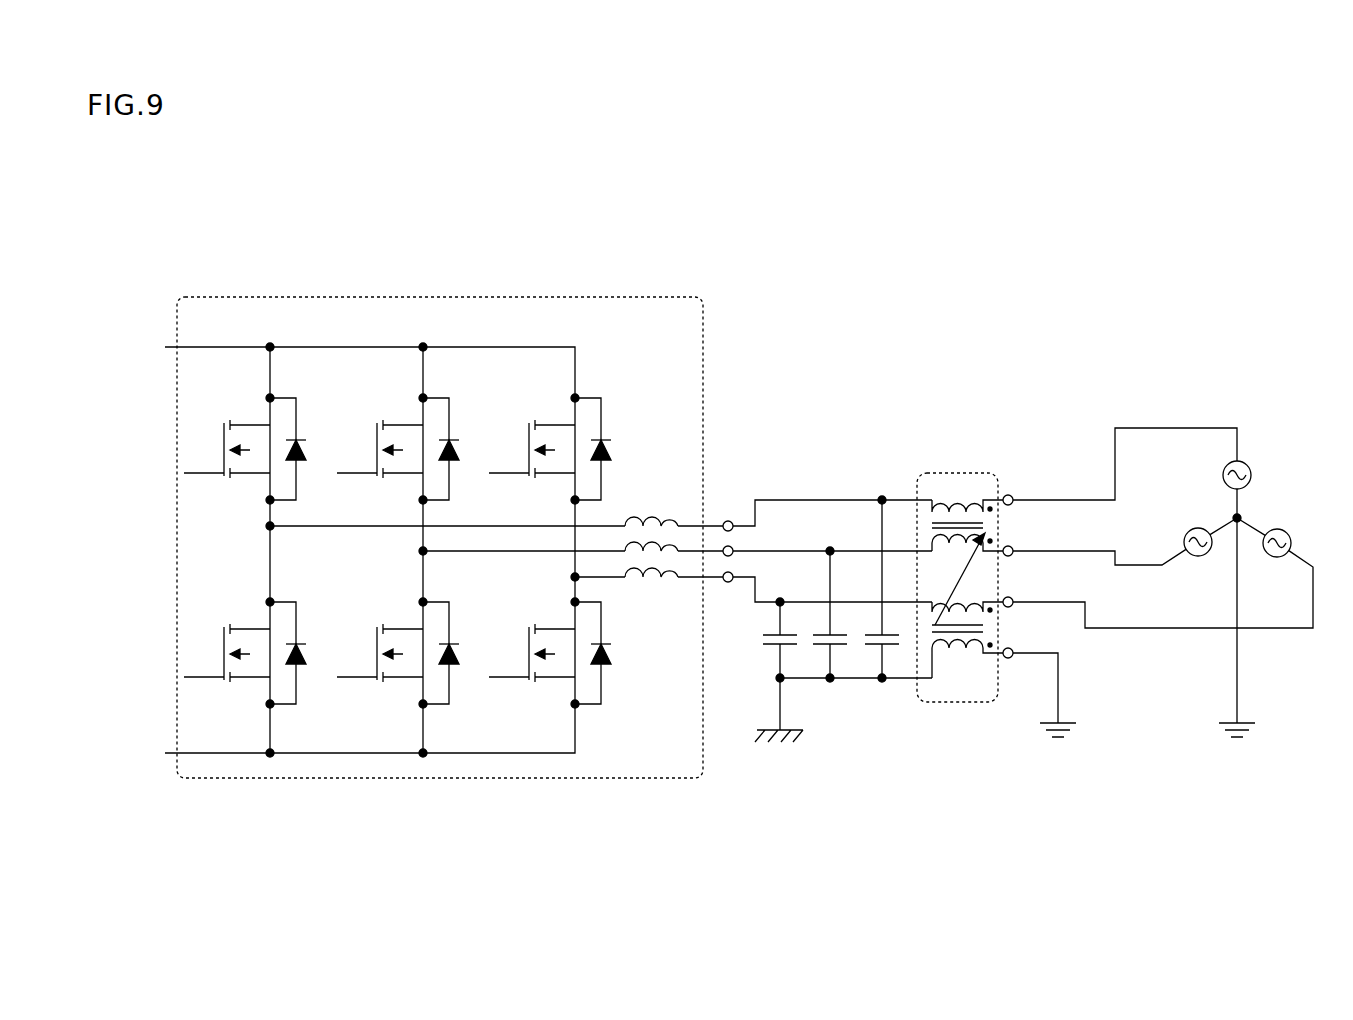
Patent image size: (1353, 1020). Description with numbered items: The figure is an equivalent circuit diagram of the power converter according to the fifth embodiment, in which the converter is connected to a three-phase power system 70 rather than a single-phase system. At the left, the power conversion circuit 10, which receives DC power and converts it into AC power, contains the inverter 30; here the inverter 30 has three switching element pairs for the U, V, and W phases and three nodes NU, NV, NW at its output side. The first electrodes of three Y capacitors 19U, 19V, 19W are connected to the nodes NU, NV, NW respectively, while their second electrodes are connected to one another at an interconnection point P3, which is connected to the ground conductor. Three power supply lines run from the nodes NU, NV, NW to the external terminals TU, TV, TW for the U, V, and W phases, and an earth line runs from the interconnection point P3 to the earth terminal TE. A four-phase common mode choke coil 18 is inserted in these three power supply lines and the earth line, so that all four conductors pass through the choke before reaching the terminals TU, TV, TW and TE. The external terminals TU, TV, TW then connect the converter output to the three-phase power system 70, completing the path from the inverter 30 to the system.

The power conversion circuit 10 is at (627, 263).
The inverter 30 is at (393, 297).
The common mode choke coil 18 is at (957, 473).
The three-phase power system 70 is at (1285, 474).
The Y capacitor 19U is at (893, 648).
The Y capacitor 19V is at (840, 648).
The Y capacitor 19W is at (790, 648).
The interconnection point P3 is at (854, 692).
The node NU is at (731, 517).
The node NV is at (742, 543).
The node NW is at (745, 569).
The external terminal TU is at (1021, 491).
The external terminal TV is at (1021, 542).
The external terminal TW is at (1023, 594).
The earth terminal TE is at (1020, 645).